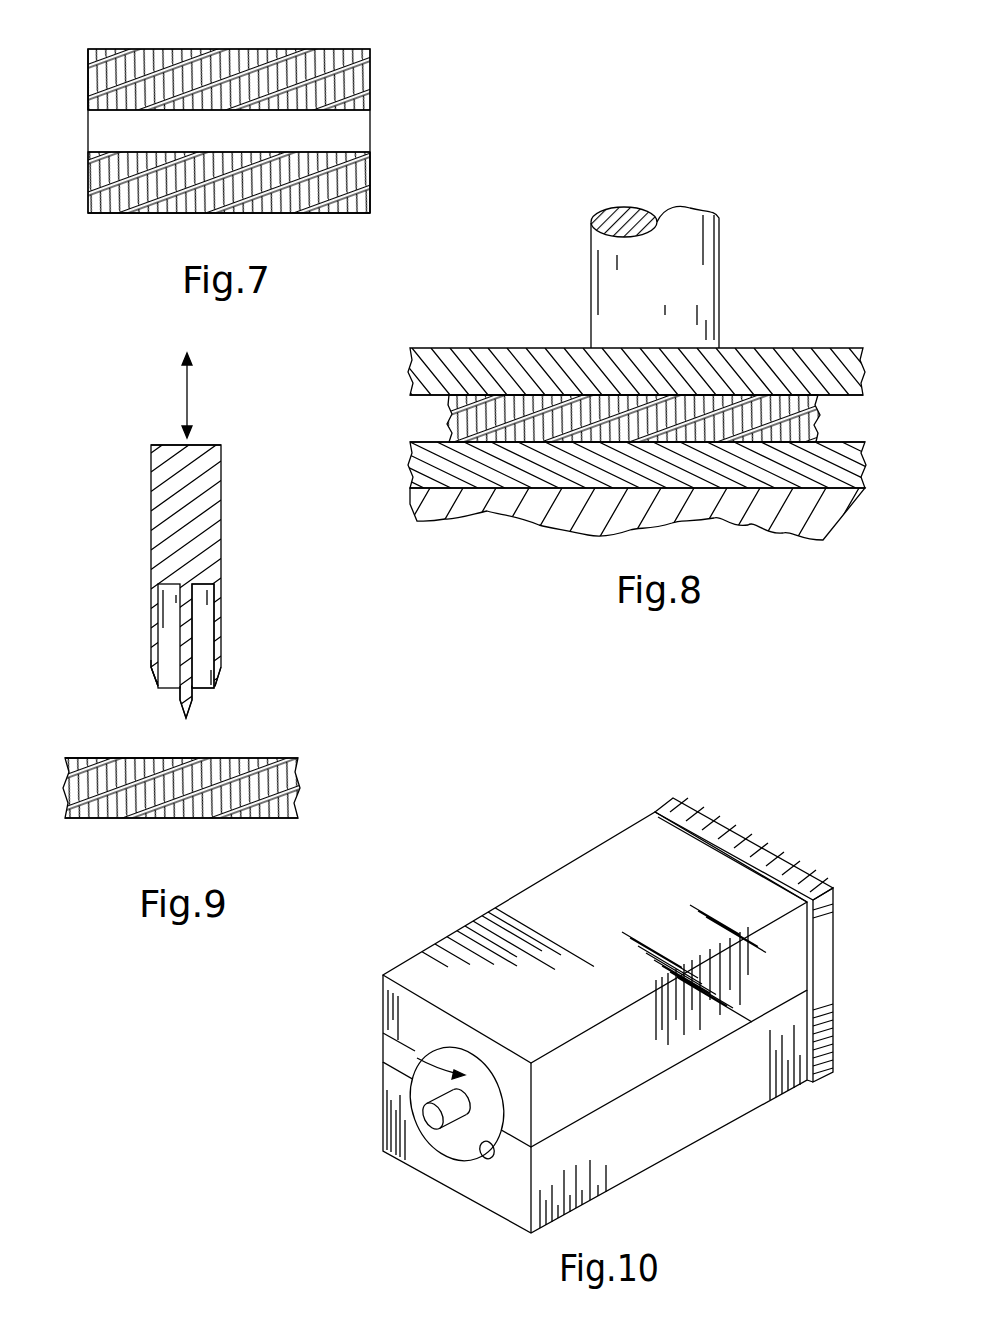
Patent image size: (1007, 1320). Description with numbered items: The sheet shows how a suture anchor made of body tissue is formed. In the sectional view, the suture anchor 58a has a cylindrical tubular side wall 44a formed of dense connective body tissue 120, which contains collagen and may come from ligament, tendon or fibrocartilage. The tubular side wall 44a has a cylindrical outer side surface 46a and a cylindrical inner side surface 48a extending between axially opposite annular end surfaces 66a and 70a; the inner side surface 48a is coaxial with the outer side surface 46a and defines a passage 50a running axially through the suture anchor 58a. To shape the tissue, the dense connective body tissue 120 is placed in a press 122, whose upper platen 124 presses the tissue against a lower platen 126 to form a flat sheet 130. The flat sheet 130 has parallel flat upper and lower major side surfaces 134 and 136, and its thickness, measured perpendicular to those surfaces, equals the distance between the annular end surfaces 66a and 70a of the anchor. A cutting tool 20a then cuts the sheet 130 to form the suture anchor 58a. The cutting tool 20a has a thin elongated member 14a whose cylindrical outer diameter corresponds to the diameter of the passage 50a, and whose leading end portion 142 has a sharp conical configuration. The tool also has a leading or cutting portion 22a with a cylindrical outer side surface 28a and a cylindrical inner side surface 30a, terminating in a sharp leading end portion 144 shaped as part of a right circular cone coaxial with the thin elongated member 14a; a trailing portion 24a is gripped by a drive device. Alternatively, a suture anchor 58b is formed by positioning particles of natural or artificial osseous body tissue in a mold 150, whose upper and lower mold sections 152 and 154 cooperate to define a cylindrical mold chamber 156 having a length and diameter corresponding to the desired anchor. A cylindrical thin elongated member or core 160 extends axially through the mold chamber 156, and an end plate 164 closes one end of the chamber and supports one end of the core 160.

In FIG. 7, the cylindrical outer side surface 46a is at (163, 49).
In FIG. 7, the suture anchor 58a is at (378, 73).
In FIG. 7, the annular end surface 66a is at (88, 90).
In FIG. 7, the cylindrical inner side surface 48a is at (325, 109).
In FIG. 7, the passage 50a is at (125, 132).
In FIG. 7, the cylindrical tubular side wall 44a is at (318, 167).
In FIG. 7, the annular end surface 70a is at (370, 192).
In FIG. 7, the dense connective body tissue 120 is at (230, 180).
In FIG. 8, the dense connective body tissue 120 is at (475, 409).
In FIG. 9, the dense connective body tissue 120 is at (253, 790).
In FIG. 8, the press 122 is at (820, 335).
In FIG. 8, the upper platen 124 is at (857, 377).
In FIG. 8, the upper major side surface 134 is at (527, 393).
In FIG. 9, the upper major side surface 134 is at (120, 758).
In FIG. 8, the flat sheet 130 is at (832, 428).
In FIG. 9, the flat sheet 130 is at (293, 752).
In FIG. 8, the lower platen 126 is at (847, 467).
In FIG. 8, the lower major side surface 136 is at (480, 443).
In FIG. 9, the lower major side surface 136 is at (93, 820).
In FIG. 9, the cutting tool 20a is at (232, 503).
In FIG. 9, the trailing portion 24a is at (180, 513).
In FIG. 9, the cutting portion 22a is at (140, 637).
In FIG. 9, the thin elongated member 14a is at (187, 617).
In FIG. 9, the cylindrical outer side surface 28a is at (222, 617).
In FIG. 9, the cylindrical inner side surface 30a is at (210, 633).
In FIG. 9, the sharp leading end portion 144 is at (150, 684).
In FIG. 9, the leading end portion 142 is at (192, 713).
In FIG. 10, the mold 150 is at (561, 860).
In FIG. 10, the upper mold section 152 is at (622, 892).
In FIG. 10, the lower mold section 154 is at (600, 1162).
In FIG. 10, the end plate 164 is at (825, 967).
In FIG. 10, the suture anchor 58b is at (384, 1032).
In FIG. 10, the core 160 is at (425, 1117).
In FIG. 10, the cylindrical mold chamber 156 is at (481, 1158).